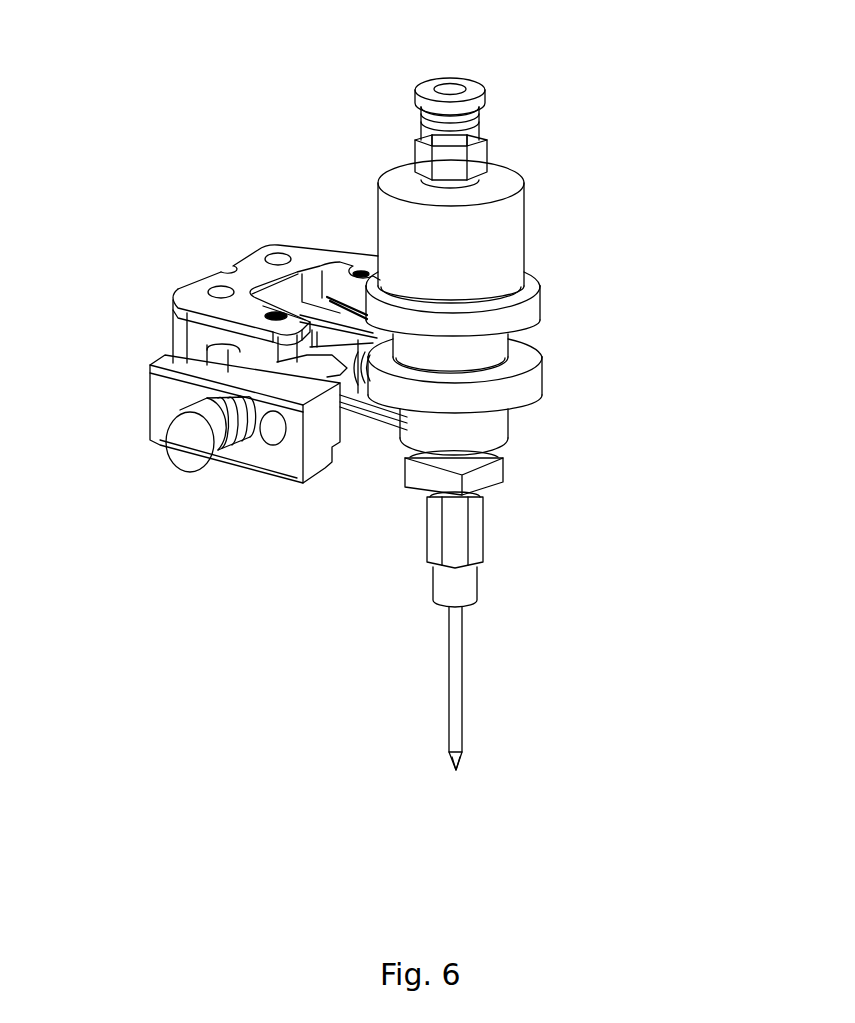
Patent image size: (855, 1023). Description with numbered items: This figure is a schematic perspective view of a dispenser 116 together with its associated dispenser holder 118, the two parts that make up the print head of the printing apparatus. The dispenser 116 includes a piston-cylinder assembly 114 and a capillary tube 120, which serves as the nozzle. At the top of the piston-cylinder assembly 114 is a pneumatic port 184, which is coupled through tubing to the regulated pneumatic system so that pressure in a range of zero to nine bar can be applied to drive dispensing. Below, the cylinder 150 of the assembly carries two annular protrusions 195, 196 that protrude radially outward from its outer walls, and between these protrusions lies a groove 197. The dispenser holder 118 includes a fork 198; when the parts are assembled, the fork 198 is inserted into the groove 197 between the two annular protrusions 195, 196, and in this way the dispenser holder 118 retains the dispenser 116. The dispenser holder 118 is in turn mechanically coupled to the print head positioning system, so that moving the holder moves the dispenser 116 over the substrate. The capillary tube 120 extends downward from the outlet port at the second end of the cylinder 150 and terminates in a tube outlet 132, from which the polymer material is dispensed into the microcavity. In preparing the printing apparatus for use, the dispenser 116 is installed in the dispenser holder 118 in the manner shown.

The piston-cylinder assembly 114 is at (653, 250).
The dispenser 116 is at (620, 94).
The dispenser holder 118 is at (193, 266).
The capillary tube 120 is at (417, 611).
The tube outlet 132 is at (453, 772).
The cylinder 150 is at (508, 431).
The pneumatic port 184 is at (447, 74).
The annular protrusion 195 is at (542, 303).
The annular protrusion 196 is at (545, 375).
The groove 197 is at (530, 336).
The fork 198 is at (272, 322).